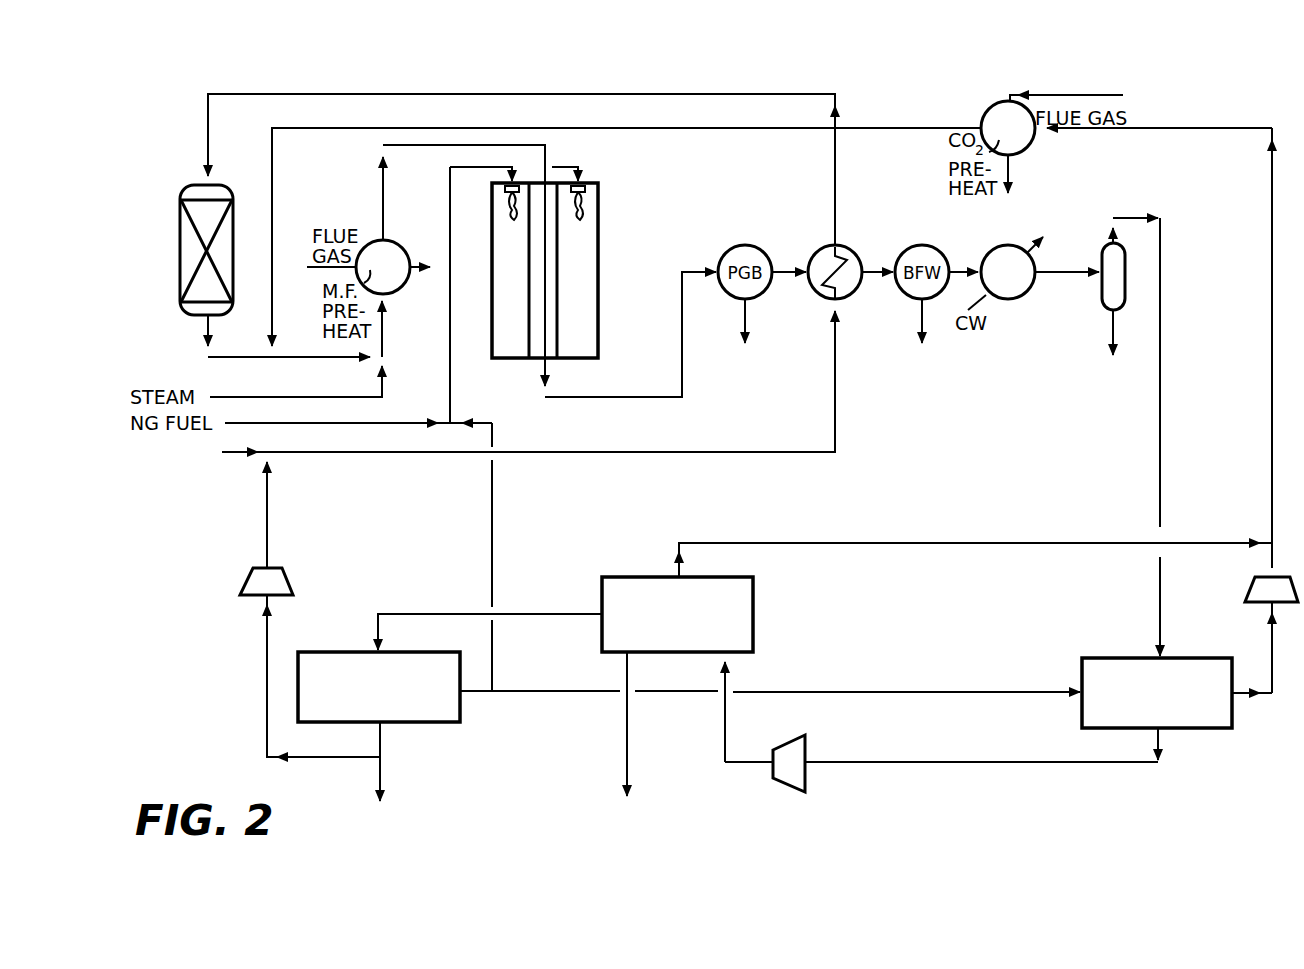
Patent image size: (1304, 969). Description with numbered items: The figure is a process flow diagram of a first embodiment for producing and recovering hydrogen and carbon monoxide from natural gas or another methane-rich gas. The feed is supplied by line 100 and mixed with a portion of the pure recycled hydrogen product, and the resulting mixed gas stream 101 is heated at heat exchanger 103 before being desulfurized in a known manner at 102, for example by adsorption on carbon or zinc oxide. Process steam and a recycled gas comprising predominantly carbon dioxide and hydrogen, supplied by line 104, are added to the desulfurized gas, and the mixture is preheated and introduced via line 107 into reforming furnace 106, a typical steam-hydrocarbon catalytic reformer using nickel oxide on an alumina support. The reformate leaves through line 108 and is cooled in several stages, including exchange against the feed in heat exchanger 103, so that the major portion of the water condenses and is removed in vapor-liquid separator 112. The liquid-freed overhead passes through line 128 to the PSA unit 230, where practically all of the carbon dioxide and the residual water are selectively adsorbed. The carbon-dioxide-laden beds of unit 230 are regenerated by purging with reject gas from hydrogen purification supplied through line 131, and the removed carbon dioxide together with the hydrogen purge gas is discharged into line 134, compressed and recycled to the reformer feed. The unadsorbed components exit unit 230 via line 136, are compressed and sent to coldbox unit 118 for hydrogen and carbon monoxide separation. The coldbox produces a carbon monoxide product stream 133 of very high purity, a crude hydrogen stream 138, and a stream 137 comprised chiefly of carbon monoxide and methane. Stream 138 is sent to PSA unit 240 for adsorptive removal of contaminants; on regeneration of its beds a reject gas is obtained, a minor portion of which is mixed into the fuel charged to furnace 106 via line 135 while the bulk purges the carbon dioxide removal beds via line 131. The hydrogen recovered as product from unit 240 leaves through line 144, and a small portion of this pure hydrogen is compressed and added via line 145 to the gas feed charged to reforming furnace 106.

The feed line 100 is at (240, 452).
The mixed gas stream 101 is at (401, 462).
The desulfurization unit 102 is at (177, 247).
The heat exchanger 103 is at (842, 298).
The recycled gas line 104 is at (758, 135).
The reforming furnace 106 is at (599, 248).
The furnace feed line 107 is at (442, 149).
The reformate line 108 is at (616, 399).
The vapor-liquid separator 112 is at (1101, 289).
The coldbox unit 118 is at (689, 641).
The separator overhead line 128 is at (1162, 299).
The purge gas line 131 is at (934, 686).
The CO product stream 133 is at (622, 750).
The CO2 recycle line 134 is at (1268, 638).
The fuel reject gas line 135 is at (490, 501).
The CO2 removal unit outlet line 136 is at (1163, 740).
The CO and methane stream 137 is at (983, 547).
The crude hydrogen stream 138 is at (560, 617).
The hydrogen product line 144 is at (383, 745).
The hydrogen recycle line 145 is at (270, 517).
The CO2 removal PSA unit 230 is at (1120, 698).
The hydrogen purification PSA unit 240 is at (408, 655).